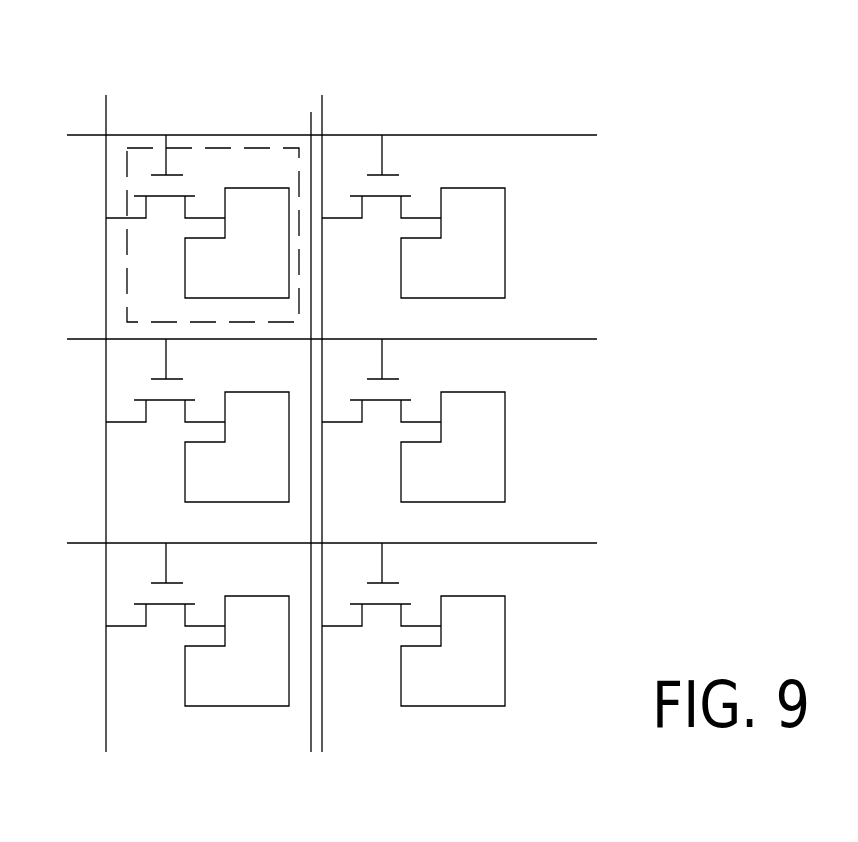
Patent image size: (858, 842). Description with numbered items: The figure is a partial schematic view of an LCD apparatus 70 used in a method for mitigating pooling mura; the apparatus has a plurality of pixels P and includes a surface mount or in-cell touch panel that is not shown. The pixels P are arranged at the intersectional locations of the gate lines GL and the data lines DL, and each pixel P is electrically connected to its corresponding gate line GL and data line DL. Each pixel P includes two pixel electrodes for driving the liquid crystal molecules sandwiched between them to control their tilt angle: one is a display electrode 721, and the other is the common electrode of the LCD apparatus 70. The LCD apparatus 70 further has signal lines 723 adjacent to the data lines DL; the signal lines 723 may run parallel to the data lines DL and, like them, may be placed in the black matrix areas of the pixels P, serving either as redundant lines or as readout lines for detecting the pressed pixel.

The LCD apparatus 70 is at (675, 61).
The display electrode 721 is at (202, 254).
The signal line 723 is at (308, 738).
The pixel P is at (112, 289).
The data line DL is at (106, 107).
The gate line GL is at (573, 135).